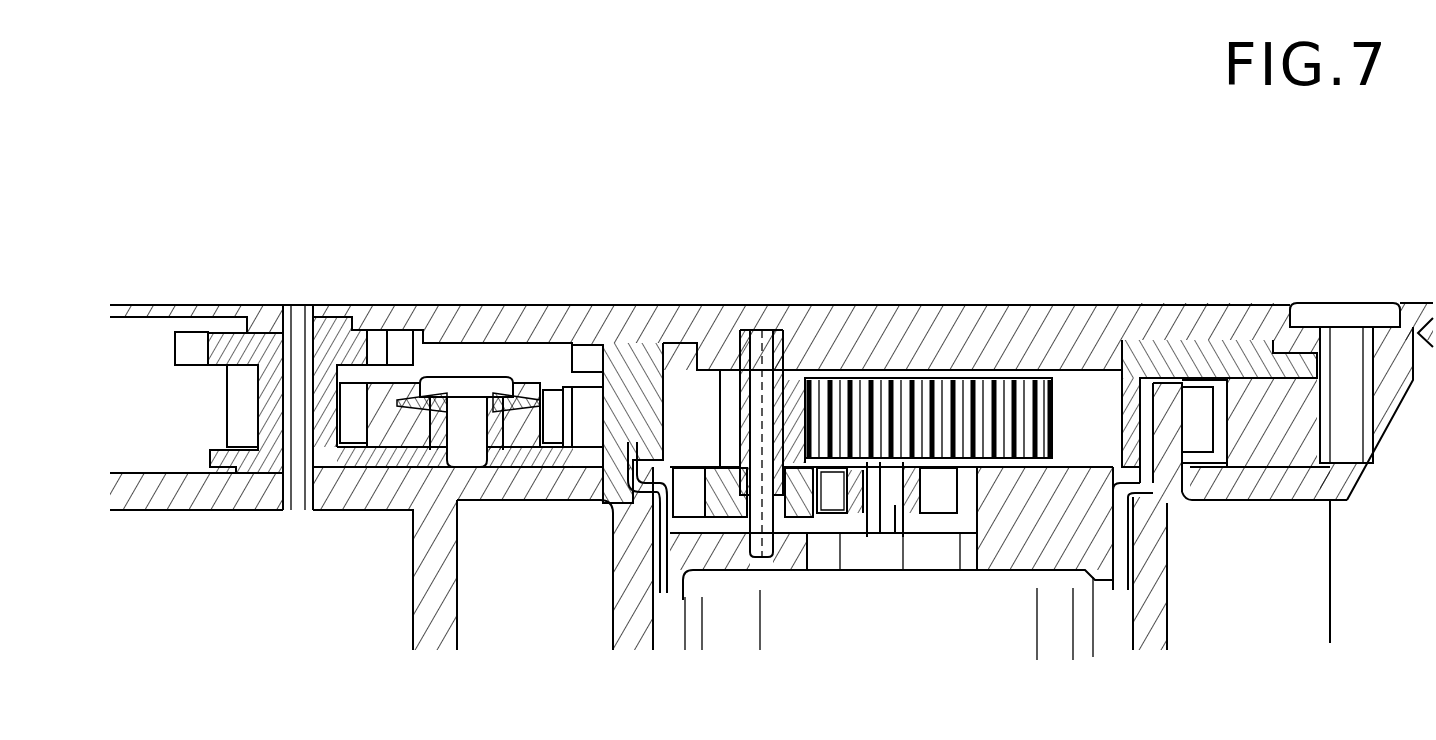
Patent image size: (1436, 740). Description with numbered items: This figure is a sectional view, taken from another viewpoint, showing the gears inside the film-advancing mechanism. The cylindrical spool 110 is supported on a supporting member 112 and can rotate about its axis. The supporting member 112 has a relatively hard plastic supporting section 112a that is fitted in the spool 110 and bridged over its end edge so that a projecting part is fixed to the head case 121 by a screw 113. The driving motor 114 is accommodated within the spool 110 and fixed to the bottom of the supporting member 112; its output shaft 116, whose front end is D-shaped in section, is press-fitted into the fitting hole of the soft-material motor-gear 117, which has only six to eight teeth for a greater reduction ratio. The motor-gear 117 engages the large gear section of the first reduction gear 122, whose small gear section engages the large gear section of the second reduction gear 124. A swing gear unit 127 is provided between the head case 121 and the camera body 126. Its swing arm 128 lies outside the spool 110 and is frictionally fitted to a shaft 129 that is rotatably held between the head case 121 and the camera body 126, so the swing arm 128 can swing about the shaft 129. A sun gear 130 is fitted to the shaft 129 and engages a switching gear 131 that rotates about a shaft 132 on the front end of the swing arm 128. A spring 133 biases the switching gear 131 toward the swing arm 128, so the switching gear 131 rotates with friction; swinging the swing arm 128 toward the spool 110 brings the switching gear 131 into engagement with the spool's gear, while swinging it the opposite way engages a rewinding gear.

The spool 110 is at (1165, 548).
The supporting member 112 is at (620, 350).
The supporting section 112a is at (1207, 303).
The screw 113 is at (1345, 303).
The driving motor 114 is at (1100, 618).
The output shaft 116 is at (888, 520).
The motor-gear 117 is at (925, 477).
The head case 121 is at (568, 305).
The first reduction gear 122 is at (737, 305).
The second reduction gear 124 is at (845, 390).
The camera body 126 is at (173, 500).
The swing gear unit 127 is at (448, 358).
The swing arm 128 is at (363, 500).
The shaft 129 is at (290, 305).
The sun gear 130 is at (219, 307).
The switching gear 131 is at (555, 440).
The shaft 132 is at (478, 440).
The spring 133 is at (522, 393).